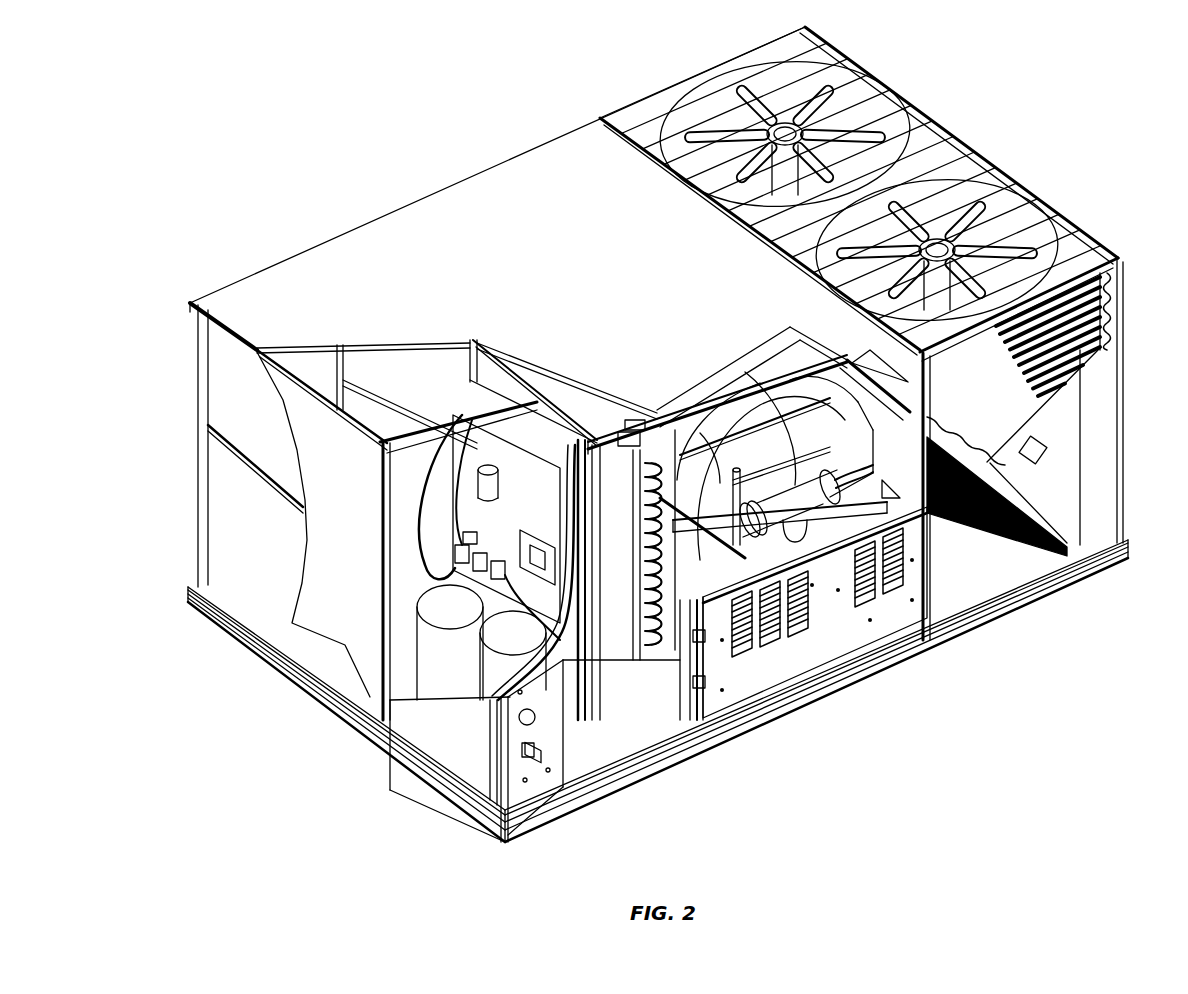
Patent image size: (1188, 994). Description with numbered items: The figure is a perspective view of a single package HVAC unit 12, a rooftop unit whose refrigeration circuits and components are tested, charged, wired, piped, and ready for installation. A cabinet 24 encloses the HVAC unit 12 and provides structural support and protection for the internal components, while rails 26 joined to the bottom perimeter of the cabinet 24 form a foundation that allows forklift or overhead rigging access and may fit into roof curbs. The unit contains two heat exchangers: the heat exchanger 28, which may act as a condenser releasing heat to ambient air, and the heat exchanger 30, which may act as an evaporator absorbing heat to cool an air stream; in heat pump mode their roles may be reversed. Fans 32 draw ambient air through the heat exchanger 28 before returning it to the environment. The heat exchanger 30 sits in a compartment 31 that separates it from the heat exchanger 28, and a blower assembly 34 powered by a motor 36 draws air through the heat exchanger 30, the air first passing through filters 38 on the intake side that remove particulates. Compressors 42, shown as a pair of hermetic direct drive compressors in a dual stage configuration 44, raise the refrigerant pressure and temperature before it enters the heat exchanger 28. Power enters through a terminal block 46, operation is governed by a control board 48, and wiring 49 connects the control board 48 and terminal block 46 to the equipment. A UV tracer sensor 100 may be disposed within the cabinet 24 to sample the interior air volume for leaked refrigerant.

The HVAC unit 12 is at (388, 165).
The UV tracer sensor 100 is at (540, 170).
The fans 32 is at (947, 233).
The heat exchanger 28 is at (1126, 298).
The cabinet 24 is at (237, 551).
The rails 26 is at (262, 663).
The heat exchanger 30 is at (657, 640).
The compartment 31 is at (735, 505).
The blower assembly 34 is at (783, 430).
The motor 36 is at (797, 467).
The filters 38 is at (618, 470).
The compressors 42 is at (423, 660).
The dual stage configuration 44 is at (412, 595).
The terminal block 46 is at (585, 570).
The control board 48 is at (540, 470).
The wiring 49 is at (632, 418).